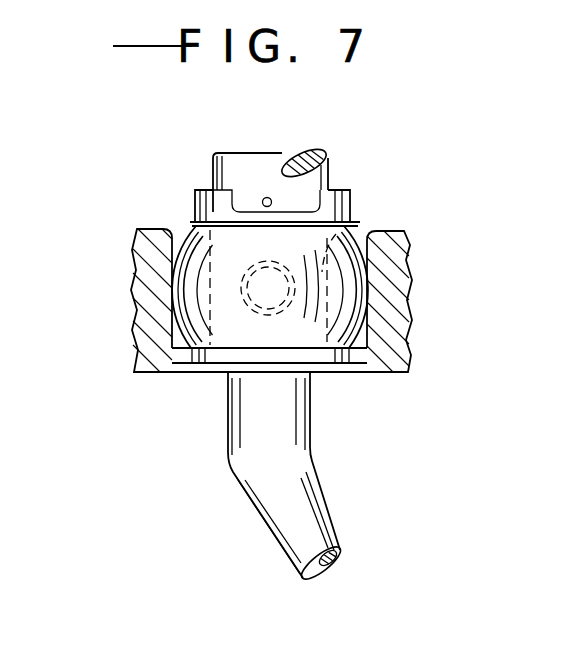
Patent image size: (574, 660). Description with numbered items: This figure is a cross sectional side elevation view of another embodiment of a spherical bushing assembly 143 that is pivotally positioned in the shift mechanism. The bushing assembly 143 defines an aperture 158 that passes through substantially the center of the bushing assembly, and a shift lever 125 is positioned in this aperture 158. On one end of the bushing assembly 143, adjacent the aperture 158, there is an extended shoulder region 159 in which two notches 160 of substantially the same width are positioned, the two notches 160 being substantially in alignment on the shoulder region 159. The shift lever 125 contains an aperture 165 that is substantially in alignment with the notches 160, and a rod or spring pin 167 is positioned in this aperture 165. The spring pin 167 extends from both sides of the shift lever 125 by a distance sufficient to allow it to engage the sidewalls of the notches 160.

The shift lever 125 is at (307, 428).
The bushing assembly 143 is at (363, 330).
The aperture 158 is at (350, 225).
The extended shoulder region 159 is at (192, 208).
The notches 160 is at (271, 200).
The aperture 165 is at (265, 199).
The spring pin 167 is at (282, 172).